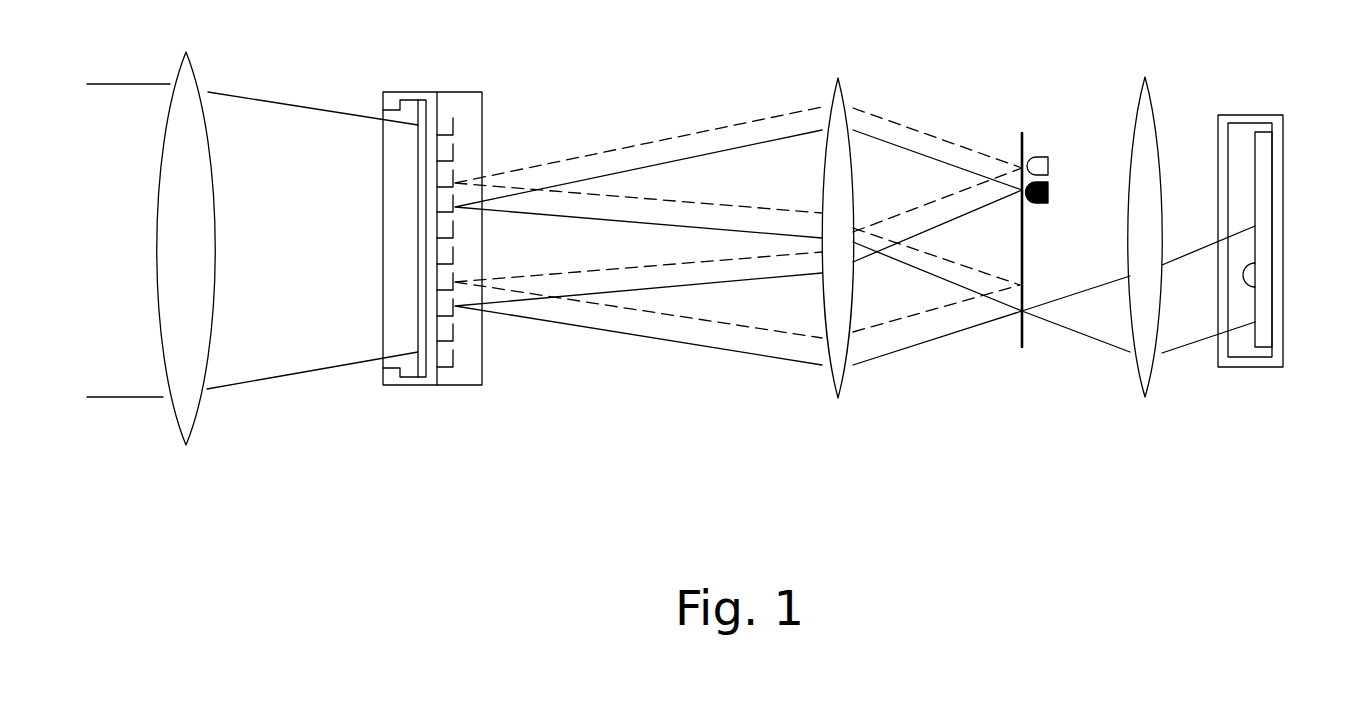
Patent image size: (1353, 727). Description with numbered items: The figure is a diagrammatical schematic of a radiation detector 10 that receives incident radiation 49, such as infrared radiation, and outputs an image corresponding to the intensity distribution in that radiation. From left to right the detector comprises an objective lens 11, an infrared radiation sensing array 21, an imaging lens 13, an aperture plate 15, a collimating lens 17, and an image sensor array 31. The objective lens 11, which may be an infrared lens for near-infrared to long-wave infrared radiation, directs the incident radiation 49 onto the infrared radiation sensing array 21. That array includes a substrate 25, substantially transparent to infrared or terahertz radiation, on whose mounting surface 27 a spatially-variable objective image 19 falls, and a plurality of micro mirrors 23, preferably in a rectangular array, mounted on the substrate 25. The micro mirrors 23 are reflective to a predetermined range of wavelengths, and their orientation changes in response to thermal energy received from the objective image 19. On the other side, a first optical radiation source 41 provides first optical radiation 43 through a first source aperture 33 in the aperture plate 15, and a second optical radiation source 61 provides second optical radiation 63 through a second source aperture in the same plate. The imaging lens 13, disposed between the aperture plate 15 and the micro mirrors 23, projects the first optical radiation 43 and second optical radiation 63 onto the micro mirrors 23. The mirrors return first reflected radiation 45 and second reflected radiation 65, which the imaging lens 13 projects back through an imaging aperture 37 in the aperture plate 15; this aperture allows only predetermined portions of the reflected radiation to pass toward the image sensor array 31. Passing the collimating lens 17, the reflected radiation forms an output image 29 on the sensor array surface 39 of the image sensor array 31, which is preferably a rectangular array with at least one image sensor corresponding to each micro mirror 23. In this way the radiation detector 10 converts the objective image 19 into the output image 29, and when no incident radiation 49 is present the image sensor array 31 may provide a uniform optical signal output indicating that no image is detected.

The radiation detector 10 is at (712, 482).
The objective lens 11 is at (197, 63).
The imaging lens 13 is at (835, 78).
The aperture plate 15 is at (1020, 355).
The collimating lens 17 is at (1150, 80).
The objective image 19 is at (433, 310).
The infrared radiation sensing array 21 is at (460, 388).
The micro mirrors 23 is at (455, 123).
The substrate 25 is at (418, 273).
The mounting surface 27 is at (438, 112).
The output image 29 is at (1258, 263).
The image sensor array 31 is at (1263, 128).
The first source aperture 33 is at (1010, 205).
The imaging aperture 37 is at (1030, 302).
The sensor array surface 39 is at (1020, 163).
The first optical radiation source 41 is at (1050, 188).
The first optical radiation 43 is at (980, 113).
The first reflected radiation 45 is at (685, 340).
The incident radiation 49 is at (262, 98).
The second optical radiation source 61 is at (1048, 160).
The second optical radiation 63 is at (940, 92).
The second reflected radiation 65 is at (767, 332).